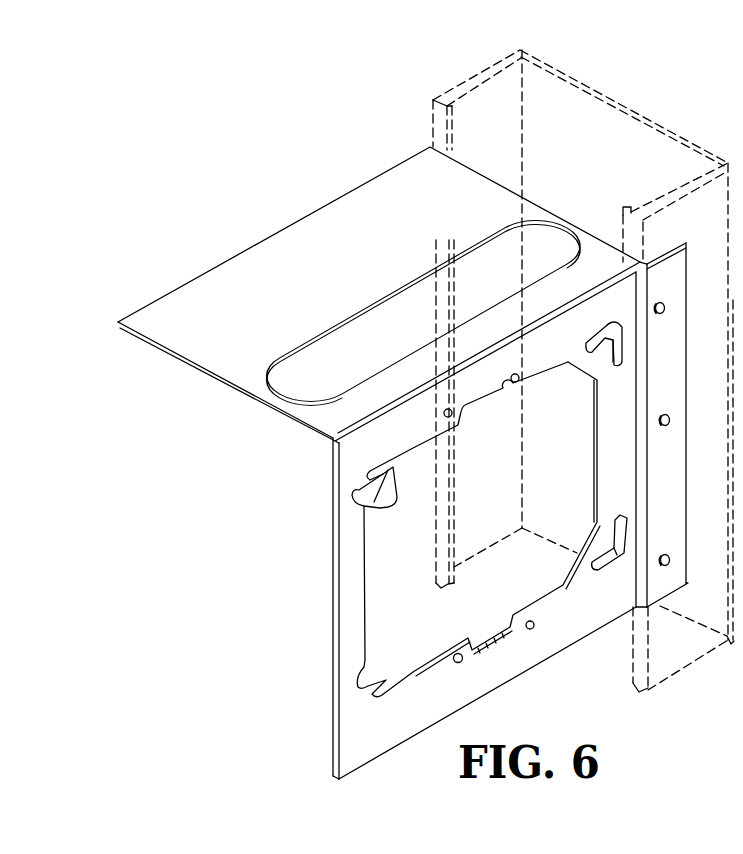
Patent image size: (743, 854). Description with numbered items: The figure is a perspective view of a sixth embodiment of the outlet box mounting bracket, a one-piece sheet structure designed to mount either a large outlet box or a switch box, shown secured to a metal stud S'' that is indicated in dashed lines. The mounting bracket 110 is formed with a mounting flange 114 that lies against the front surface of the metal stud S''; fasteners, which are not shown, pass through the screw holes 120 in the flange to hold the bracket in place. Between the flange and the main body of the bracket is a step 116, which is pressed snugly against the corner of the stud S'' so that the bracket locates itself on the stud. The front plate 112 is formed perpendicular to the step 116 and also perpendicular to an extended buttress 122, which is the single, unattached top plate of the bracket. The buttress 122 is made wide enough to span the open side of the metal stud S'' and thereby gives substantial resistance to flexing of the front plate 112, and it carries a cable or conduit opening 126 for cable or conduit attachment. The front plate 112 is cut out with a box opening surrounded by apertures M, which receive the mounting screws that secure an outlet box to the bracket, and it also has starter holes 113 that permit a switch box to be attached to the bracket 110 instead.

The mounting bracket 110 is at (328, 516).
The front plate 112 is at (535, 360).
The starter holes 113 is at (457, 655).
The mounting flange 114 is at (665, 450).
The step 116 is at (640, 276).
The screw holes 120 is at (668, 420).
The extended buttress 122 is at (263, 247).
The cable or conduit opening 126 is at (466, 236).
The apertures M is at (382, 504).
The metal stud S'' is at (583, 371).